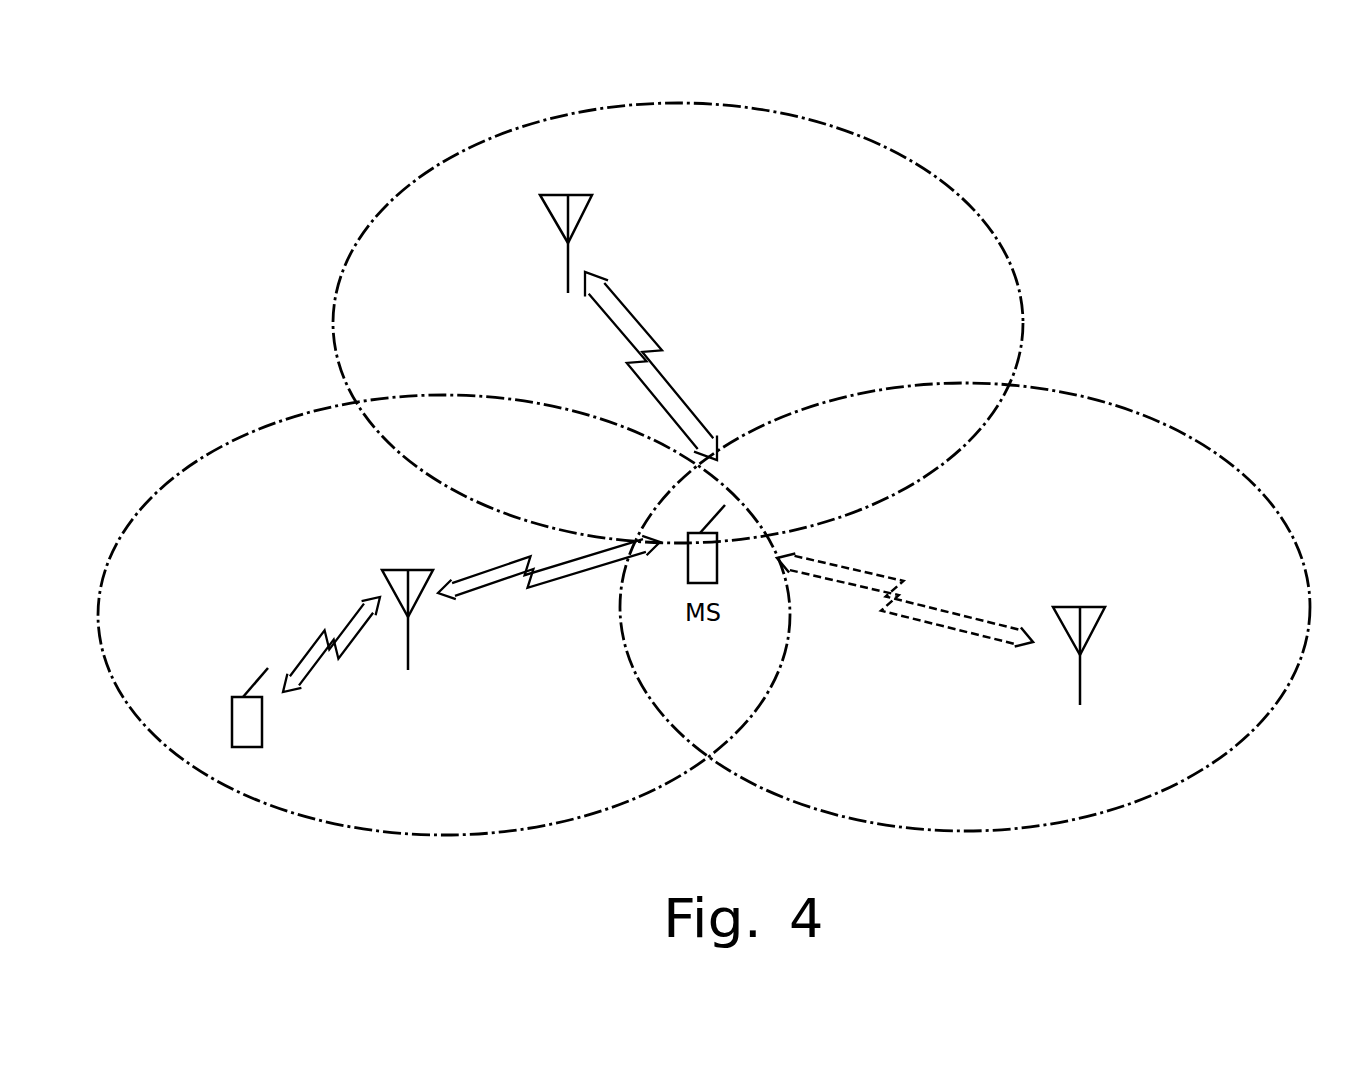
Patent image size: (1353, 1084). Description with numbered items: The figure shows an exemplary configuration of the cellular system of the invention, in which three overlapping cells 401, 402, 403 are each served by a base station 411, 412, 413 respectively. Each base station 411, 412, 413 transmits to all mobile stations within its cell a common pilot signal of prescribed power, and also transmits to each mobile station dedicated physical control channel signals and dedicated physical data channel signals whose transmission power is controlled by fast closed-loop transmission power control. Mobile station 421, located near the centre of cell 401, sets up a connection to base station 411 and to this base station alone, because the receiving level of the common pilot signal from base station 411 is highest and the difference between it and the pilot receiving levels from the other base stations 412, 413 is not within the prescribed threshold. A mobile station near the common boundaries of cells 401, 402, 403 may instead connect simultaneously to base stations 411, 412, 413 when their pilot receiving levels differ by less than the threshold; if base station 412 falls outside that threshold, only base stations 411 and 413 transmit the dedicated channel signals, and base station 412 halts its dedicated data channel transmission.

The cell 401 is at (444, 597).
The cell 402 is at (965, 597).
The cell 403 is at (678, 302).
The base station 411 is at (412, 604).
The base station 412 is at (1097, 625).
The base station 413 is at (592, 212).
The mobile station 421 is at (262, 716).